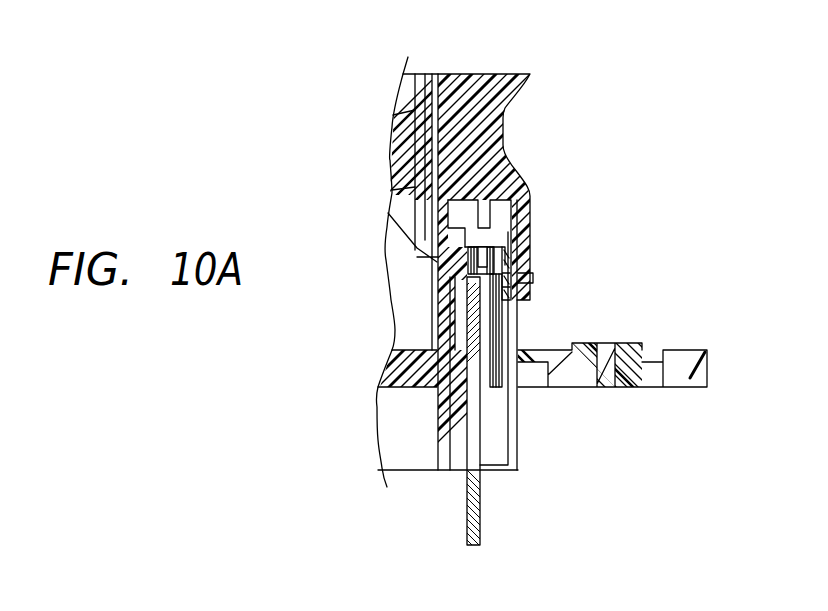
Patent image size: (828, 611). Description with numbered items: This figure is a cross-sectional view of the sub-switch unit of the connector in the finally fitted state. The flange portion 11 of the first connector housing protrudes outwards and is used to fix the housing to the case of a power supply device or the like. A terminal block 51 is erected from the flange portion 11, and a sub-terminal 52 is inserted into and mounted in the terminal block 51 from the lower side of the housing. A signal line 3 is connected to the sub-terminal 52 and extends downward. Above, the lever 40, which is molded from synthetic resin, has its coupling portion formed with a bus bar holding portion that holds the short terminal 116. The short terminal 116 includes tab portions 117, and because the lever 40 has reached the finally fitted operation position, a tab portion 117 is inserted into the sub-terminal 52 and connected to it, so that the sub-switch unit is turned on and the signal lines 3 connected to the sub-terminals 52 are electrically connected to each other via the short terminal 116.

The lever 40 is at (540, 74).
The short terminal 116 is at (532, 196).
The tab portions 117 is at (532, 268).
The sub-terminals 52 is at (532, 296).
The terminal block 51 is at (516, 326).
The signal lines 3 is at (481, 512).
The flange portion 11 is at (665, 388).